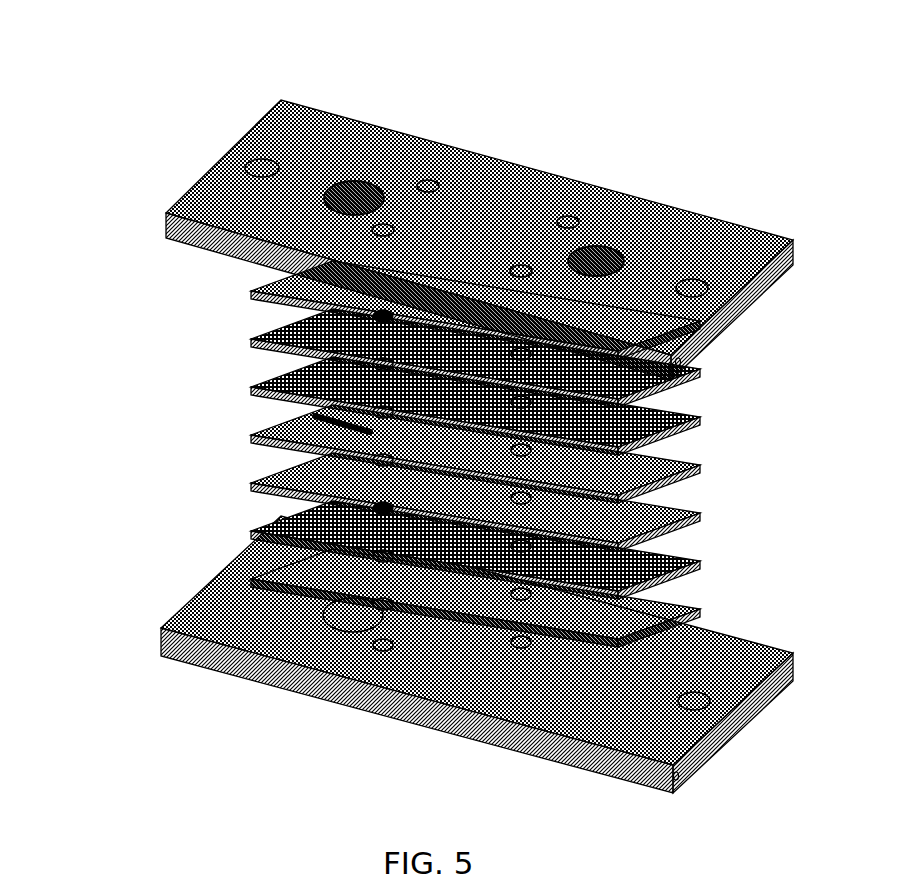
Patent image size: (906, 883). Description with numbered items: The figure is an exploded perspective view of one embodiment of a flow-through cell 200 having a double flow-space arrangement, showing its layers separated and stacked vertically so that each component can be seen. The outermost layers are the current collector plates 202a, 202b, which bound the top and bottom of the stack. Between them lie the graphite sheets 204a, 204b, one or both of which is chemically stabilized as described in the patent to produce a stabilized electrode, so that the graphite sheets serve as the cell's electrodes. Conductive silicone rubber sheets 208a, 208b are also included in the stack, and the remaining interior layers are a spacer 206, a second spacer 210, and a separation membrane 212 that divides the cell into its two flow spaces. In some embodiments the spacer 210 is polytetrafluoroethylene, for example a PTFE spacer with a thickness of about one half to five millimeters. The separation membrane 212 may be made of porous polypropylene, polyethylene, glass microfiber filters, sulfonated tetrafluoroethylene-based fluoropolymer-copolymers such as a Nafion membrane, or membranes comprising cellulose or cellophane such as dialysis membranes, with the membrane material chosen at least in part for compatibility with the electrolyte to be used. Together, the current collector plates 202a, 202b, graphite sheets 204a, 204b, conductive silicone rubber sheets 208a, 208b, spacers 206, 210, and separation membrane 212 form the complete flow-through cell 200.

The flow-through cell 200 is at (426, 76).
The current collector plate 202a is at (153, 620).
The current collector plate 202b is at (158, 207).
The graphite sheet 204a is at (243, 523).
The graphite sheet 204b is at (243, 331).
The spacer 206 is at (243, 379).
The conductive silicone rubber sheet 208a is at (243, 571).
The conductive silicone rubber sheet 208b is at (243, 283).
The spacer 210 is at (243, 475).
The separation membrane 212 is at (243, 427).